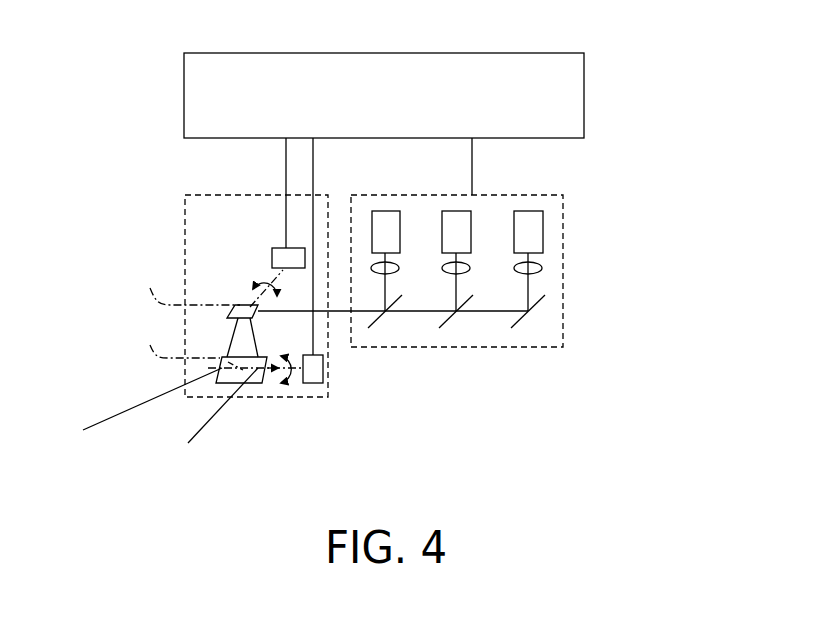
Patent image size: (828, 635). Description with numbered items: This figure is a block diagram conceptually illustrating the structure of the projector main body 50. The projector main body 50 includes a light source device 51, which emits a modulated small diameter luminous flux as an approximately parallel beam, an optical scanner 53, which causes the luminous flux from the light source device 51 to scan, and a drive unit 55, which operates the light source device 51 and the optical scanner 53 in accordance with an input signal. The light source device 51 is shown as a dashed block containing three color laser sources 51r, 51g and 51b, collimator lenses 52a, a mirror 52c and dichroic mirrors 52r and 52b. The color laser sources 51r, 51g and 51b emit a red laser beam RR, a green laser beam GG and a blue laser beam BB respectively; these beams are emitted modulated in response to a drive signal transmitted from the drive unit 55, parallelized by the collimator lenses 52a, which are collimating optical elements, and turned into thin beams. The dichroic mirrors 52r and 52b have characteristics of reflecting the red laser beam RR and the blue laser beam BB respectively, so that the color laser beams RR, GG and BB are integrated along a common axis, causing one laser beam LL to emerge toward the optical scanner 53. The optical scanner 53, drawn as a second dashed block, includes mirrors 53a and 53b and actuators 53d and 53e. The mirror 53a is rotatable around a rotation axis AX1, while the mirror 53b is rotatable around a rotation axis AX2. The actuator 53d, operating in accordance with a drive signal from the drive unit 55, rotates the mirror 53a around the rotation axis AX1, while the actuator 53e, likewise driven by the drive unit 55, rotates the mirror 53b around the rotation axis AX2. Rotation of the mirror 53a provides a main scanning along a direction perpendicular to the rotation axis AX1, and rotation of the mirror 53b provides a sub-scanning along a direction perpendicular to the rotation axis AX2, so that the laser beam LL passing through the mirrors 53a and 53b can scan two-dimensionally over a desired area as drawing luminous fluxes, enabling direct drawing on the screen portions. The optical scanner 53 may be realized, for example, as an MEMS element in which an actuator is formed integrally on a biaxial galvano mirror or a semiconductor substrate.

The projector main body 50 is at (697, 24).
The drive unit 55 is at (575, 99).
The optical scanner 53 is at (185, 223).
The mirror 53a is at (242, 306).
The mirror 53b is at (258, 384).
The actuator 53d is at (278, 248).
The actuator 53e is at (312, 385).
The light source device 51 is at (567, 240).
The color laser source 51b is at (386, 222).
The color laser source 51r is at (456, 222).
The color laser source 51g is at (530, 222).
The collimator lens 52a is at (398, 272).
The dichroic mirror 52b is at (380, 316).
The dichroic mirror 52r is at (451, 316).
The mirror 52c is at (535, 303).
The rotation axis AX1 is at (184, 287).
The rotation axis AX2 is at (185, 348).
The blue laser beam BB is at (384, 288).
The red laser beam RR is at (456, 292).
The green laser beam GG is at (528, 283).
The laser beam LL is at (343, 313).